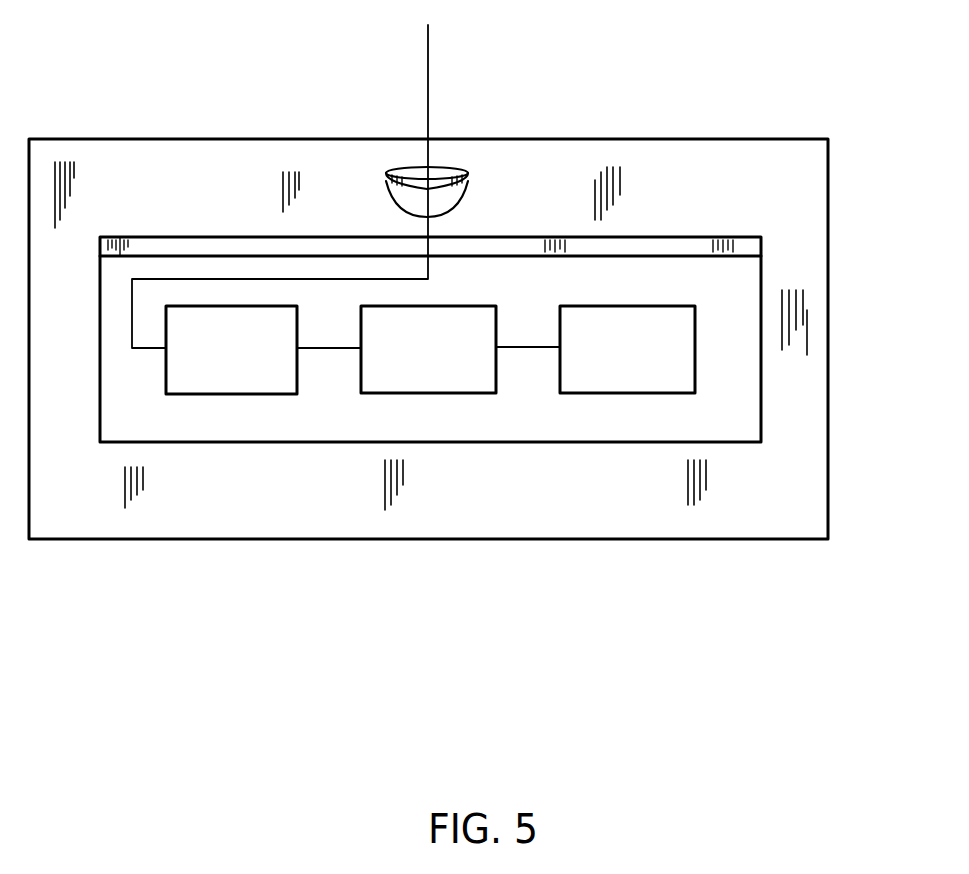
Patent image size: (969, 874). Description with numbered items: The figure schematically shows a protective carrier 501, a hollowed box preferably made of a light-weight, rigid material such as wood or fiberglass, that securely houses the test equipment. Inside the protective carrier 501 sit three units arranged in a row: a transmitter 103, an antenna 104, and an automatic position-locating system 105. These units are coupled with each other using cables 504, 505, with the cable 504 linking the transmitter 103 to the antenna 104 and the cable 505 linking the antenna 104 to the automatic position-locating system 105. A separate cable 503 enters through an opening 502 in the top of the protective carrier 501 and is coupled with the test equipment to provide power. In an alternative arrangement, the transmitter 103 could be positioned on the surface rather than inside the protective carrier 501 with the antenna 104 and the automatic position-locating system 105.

The protective carrier 501 is at (828, 223).
The opening 502 is at (440, 163).
The cable 503 is at (430, 55).
The cable 504 is at (322, 349).
The cable 505 is at (525, 348).
The transmitter 103 is at (231, 350).
The antenna 104 is at (428, 349).
The automatic position-locating system 105 is at (627, 349).